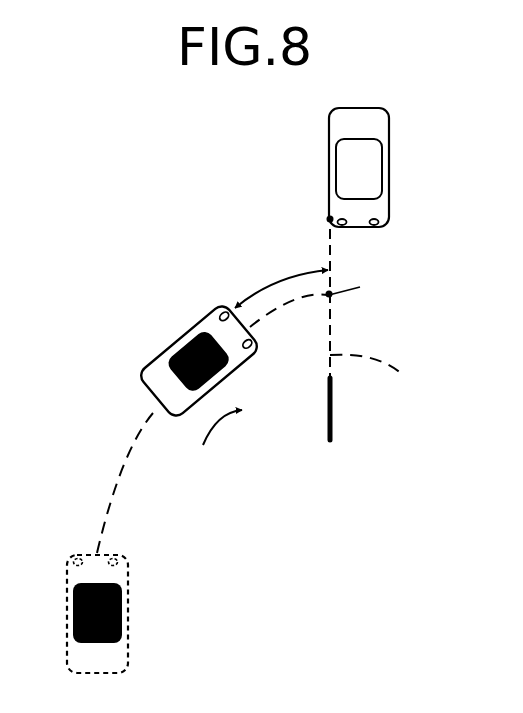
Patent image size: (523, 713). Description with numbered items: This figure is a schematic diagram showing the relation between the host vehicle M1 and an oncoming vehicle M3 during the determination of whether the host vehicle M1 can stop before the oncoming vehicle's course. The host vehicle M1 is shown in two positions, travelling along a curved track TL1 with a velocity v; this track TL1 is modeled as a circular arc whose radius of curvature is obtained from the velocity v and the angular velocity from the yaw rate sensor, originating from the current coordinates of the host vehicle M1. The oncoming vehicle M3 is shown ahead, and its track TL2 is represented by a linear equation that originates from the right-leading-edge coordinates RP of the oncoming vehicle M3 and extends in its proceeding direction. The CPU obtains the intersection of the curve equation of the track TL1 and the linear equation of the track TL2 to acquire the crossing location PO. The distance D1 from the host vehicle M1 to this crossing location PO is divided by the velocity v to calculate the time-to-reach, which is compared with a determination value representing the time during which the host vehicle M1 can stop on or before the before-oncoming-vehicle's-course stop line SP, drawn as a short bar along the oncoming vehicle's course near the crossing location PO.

The host vehicle M1 is at (152, 378).
The oncoming vehicle M3 is at (373, 122).
The right-leading-edge coordinates RP is at (330, 218).
The distance to the intersection point D1 is at (281, 283).
The crossing location PO is at (330, 294).
The track of the host vehicle TL1 is at (135, 442).
The track of the oncoming vehicle TL2 is at (383, 381).
The before-oncoming-vehicle's-course stop line SP is at (333, 410).
The velocity of the host vehicle v is at (222, 429).